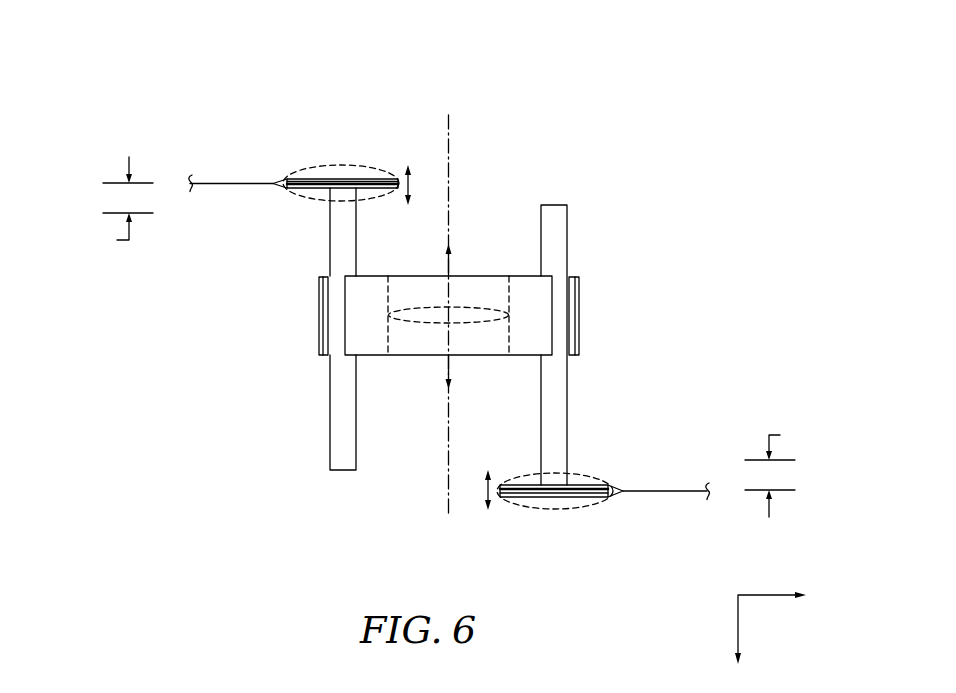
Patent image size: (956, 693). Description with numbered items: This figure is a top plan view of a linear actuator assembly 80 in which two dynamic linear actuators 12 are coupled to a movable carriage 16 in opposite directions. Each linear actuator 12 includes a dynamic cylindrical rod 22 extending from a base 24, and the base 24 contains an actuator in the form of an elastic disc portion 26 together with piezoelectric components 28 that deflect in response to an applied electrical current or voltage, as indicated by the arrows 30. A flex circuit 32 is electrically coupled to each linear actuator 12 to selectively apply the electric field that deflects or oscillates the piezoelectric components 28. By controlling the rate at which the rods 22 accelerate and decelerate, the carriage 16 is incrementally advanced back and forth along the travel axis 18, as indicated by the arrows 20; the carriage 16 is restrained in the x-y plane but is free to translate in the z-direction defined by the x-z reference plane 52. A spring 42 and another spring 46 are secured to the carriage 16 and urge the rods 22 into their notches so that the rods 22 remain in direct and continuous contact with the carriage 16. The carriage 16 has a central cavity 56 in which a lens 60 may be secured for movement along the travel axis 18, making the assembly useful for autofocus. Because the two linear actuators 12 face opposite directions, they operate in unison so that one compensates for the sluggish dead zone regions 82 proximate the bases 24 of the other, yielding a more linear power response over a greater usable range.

The linear actuator assembly 80 is at (636, 44).
The linear actuator 12 is at (289, 235).
The carriage 16 is at (375, 335).
The travel axis 18 is at (448, 502).
The arrows 20 is at (446, 260).
The dynamic cylindrical rod 22 is at (340, 382).
The base 24 is at (323, 150).
The elastic disc portion 26 is at (387, 178).
The piezoelectric components 28 is at (374, 182).
The arrows 30 is at (410, 182).
The flex circuit 32 is at (236, 182).
The spring 42 is at (318, 311).
The spring 46 is at (580, 313).
The x-z reference plane 52 is at (737, 628).
The central cavity 56 is at (505, 258).
The lens 60 is at (418, 322).
The regions 82 is at (449, 337).